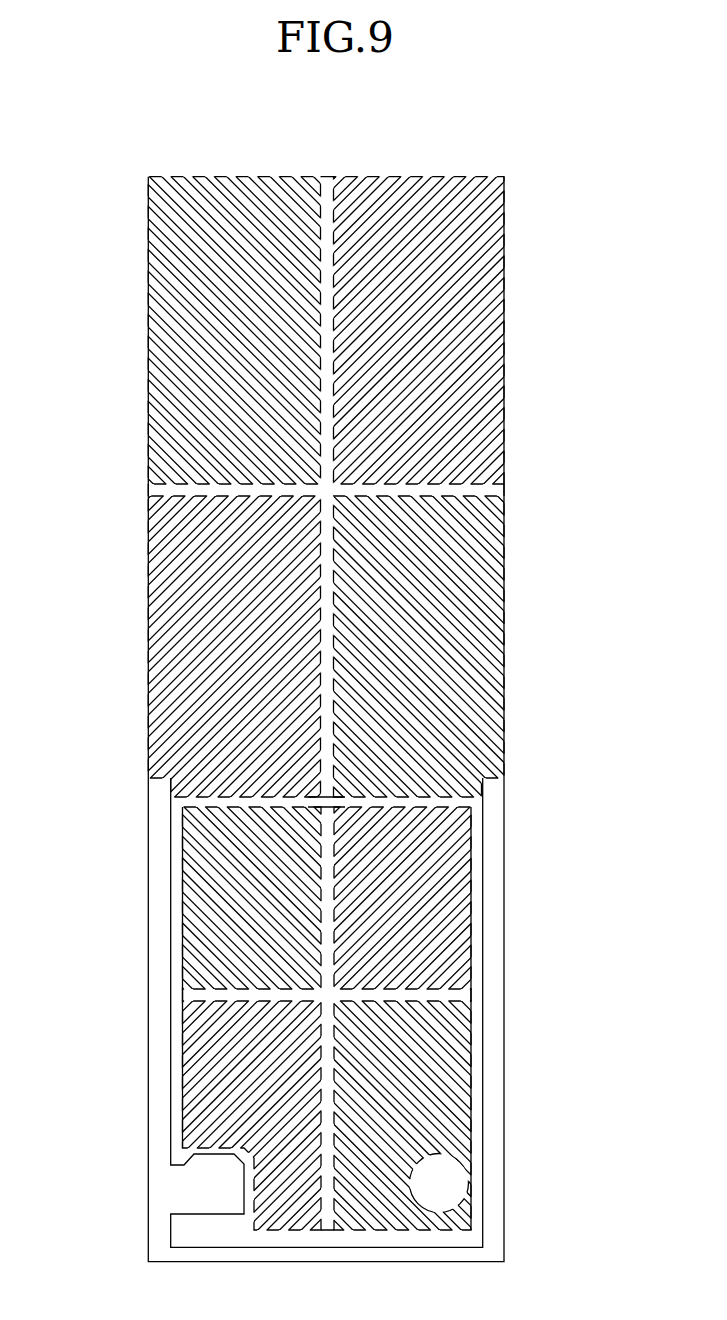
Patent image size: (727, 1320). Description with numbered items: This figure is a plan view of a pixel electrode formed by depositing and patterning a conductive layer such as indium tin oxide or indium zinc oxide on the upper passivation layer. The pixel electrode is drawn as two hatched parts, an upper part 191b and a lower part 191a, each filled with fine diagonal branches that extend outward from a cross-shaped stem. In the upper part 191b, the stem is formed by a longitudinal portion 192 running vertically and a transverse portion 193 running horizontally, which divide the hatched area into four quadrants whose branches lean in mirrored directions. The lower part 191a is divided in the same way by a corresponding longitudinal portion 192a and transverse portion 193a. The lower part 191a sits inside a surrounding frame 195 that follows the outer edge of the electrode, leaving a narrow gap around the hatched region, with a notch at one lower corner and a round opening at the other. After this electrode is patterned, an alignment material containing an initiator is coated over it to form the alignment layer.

The first sensing electrode portion 191a is at (470, 831).
The second sensing electrode portion 191b is at (482, 556).
The longitudinal portion 192 is at (338, 305).
The vertical slit of first portion 192a is at (338, 1117).
The transverse portion 193 is at (447, 482).
The horizontal slit of first portion 193a is at (440, 1012).
The frame 195 is at (148, 909).